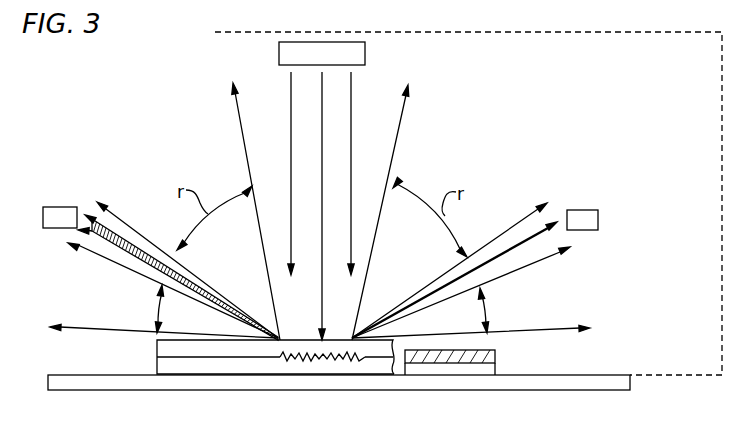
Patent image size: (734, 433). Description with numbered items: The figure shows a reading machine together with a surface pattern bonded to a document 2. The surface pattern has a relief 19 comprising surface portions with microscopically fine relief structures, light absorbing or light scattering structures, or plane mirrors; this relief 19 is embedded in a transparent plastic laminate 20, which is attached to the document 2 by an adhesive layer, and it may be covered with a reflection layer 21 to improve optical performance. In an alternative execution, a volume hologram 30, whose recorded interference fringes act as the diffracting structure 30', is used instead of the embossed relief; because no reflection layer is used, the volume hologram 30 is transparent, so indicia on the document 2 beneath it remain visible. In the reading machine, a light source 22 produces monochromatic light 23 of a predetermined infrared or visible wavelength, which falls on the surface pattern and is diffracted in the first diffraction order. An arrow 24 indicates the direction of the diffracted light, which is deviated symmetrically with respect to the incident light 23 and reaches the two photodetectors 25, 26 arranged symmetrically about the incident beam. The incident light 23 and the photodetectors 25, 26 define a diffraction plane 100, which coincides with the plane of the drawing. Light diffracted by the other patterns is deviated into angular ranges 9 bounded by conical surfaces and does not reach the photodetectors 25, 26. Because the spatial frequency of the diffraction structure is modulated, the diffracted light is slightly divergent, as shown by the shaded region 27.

The document 2 is at (378, 380).
The angle of emitted radiation 9 is at (157, 311).
The relief 19 is at (300, 358).
The laminate 20 is at (157, 355).
The reflection layer 21 is at (210, 358).
The light source 22 is at (365, 53).
The light 23 is at (320, 97).
The arrow 24 is at (533, 242).
The photodetector 25 is at (577, 210).
The photodetector 26 is at (56, 207).
The shaded region 27 is at (118, 238).
The volume hologram 30 is at (474, 351).
The diffracting structure 30' is at (450, 392).
The diffraction plane 100 is at (648, 102).